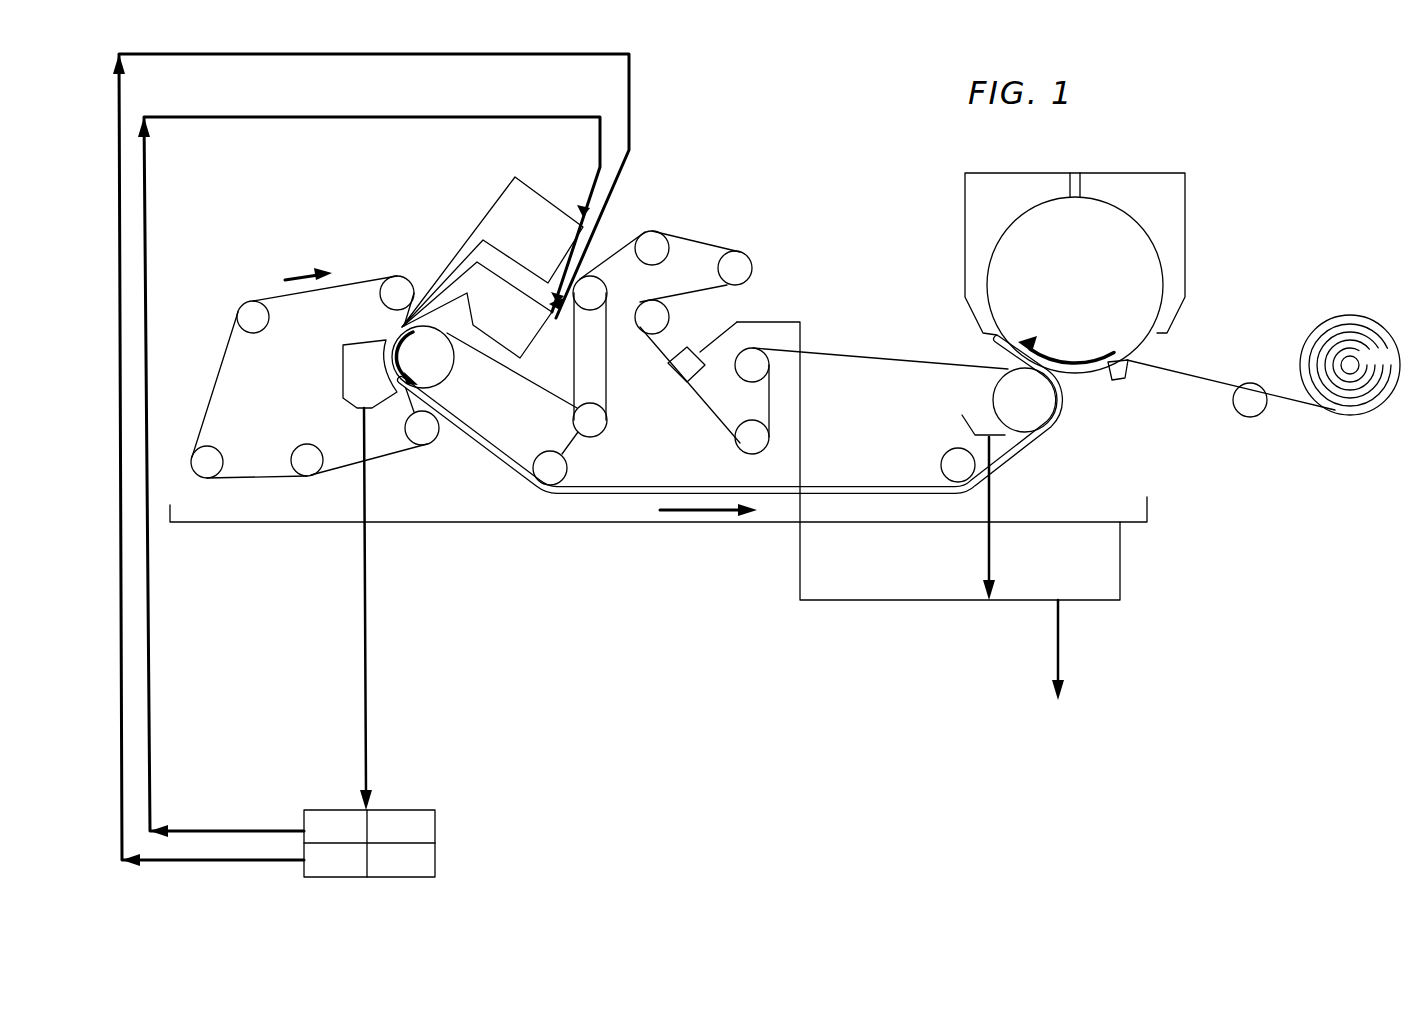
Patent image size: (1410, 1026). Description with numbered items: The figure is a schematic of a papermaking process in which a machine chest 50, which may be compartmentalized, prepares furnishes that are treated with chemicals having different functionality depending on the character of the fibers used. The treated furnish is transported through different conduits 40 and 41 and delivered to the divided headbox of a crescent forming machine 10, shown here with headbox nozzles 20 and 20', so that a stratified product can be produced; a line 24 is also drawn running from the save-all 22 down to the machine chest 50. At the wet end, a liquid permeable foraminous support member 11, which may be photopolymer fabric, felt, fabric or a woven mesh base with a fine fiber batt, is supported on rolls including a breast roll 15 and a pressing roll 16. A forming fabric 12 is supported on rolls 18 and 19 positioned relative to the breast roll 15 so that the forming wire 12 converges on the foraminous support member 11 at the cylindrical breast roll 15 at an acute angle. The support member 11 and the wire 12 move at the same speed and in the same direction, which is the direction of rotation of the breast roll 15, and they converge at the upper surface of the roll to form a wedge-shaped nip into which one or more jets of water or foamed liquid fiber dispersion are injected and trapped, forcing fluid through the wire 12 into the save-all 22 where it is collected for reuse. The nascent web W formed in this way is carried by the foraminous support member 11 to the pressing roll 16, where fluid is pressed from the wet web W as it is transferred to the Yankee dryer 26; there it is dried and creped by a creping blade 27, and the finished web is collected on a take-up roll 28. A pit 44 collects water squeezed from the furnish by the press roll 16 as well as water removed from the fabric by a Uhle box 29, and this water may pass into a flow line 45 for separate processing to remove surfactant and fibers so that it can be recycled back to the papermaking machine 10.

The crescent forming machine 10 is at (622, 222).
The foraminous support member 11 is at (852, 357).
The forming fabric 12 is at (217, 373).
The breast roll 15 is at (437, 367).
The pressing roll 16 is at (1045, 407).
The roll 18 is at (393, 293).
The roll 19 is at (427, 430).
The headbox nozzle 20 is at (477, 291).
The second headbox nozzle 20' is at (492, 235).
The save-all 22 is at (343, 367).
The signal line 24 is at (368, 660).
The Yankee dryer 26 is at (1092, 266).
The creping blade 27 is at (1123, 378).
The take-up roll 28 is at (1352, 333).
The Uhle box 29 is at (677, 367).
The conduit 40 is at (147, 204).
The conduit 41 is at (119, 240).
The pit 44 is at (1040, 524).
The flow line 45 is at (1060, 640).
The machine chest 50 is at (425, 825).
The nascent web W is at (770, 497).